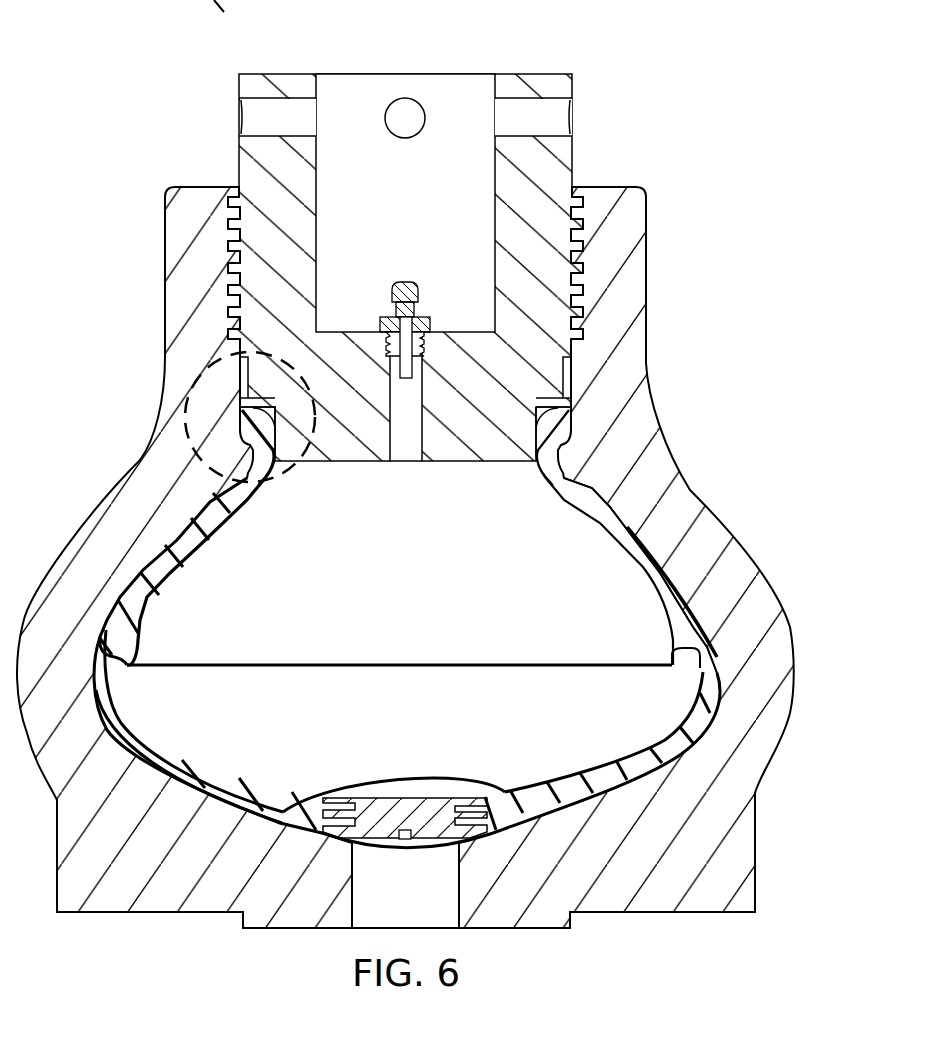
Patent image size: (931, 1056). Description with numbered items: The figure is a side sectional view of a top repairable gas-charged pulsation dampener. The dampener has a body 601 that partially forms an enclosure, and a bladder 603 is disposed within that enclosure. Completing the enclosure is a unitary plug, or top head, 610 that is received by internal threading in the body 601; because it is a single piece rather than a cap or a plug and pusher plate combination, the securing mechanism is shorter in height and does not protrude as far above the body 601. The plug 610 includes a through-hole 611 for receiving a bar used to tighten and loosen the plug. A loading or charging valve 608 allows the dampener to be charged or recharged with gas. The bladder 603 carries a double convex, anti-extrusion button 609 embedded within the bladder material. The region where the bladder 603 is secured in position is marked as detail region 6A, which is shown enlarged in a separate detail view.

The body 601 is at (784, 644).
The bladder 603 is at (675, 614).
The charging valve 608 is at (402, 281).
The anti-extrusion button 609 is at (393, 800).
The plug 610 is at (365, 239).
The through-hole 611 is at (226, 117).
The detail region A 6A is at (291, 484).